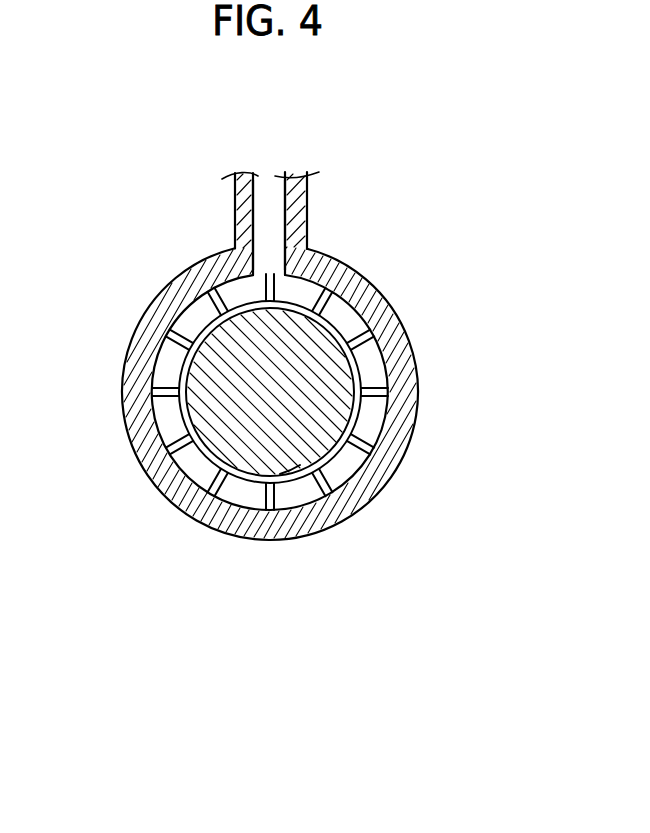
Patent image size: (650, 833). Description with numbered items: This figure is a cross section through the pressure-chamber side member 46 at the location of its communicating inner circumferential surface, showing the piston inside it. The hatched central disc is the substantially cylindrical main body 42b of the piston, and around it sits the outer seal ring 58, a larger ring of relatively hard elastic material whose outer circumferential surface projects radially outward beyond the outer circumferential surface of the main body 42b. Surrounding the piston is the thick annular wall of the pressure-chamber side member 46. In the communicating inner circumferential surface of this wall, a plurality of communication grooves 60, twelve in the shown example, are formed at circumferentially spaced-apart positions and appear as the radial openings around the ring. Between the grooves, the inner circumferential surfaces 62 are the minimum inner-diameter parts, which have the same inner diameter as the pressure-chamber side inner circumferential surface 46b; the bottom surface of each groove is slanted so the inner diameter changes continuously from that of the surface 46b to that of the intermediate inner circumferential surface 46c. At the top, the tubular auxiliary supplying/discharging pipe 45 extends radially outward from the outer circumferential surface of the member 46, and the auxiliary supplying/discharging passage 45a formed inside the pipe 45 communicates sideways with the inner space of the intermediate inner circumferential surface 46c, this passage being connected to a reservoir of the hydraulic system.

The auxiliary supplying/discharging pipe 45 is at (243, 203).
The auxiliary supplying/discharging passage 45a is at (273, 201).
The pressure-chamber side member 46 is at (410, 488).
The pressure-chamber side inner circumferential surface 46b is at (293, 463).
The intermediate inner circumferential surface 46c is at (206, 386).
The outer seal ring 58 is at (378, 302).
The communication grooves 60 is at (212, 292).
The inner circumferential surfaces 62 is at (192, 326).
The main body 42b is at (255, 447).